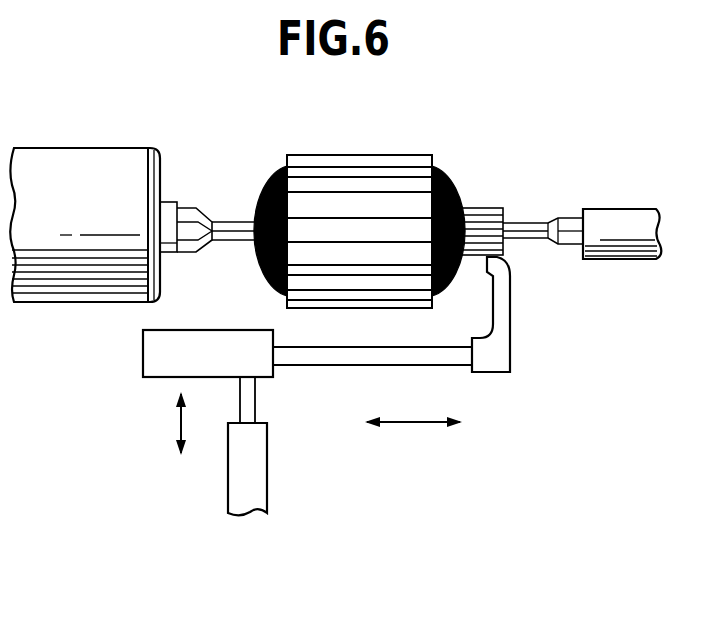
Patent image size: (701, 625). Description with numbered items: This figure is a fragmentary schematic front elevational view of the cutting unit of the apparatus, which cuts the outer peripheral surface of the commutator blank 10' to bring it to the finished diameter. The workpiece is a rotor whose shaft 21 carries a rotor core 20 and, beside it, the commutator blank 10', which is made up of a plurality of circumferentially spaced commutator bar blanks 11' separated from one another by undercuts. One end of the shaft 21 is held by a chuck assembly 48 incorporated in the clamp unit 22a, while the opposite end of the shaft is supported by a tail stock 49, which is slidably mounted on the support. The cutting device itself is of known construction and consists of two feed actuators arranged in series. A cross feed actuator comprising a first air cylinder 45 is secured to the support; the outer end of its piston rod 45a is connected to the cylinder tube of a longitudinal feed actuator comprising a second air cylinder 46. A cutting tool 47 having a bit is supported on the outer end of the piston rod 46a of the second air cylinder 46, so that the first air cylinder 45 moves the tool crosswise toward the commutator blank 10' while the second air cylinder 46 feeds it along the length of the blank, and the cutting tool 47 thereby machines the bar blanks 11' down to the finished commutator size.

The clamp unit 22a is at (97, 160).
The chuck assembly 48 is at (207, 203).
The shaft 21 is at (237, 221).
The rotor core 20 is at (347, 155).
The commutator blank 10' is at (488, 188).
The commutator bar blank 11' is at (543, 203).
The tail stock 49 is at (630, 212).
The cutting tool 47 is at (510, 309).
The second air cylinder 46 is at (143, 352).
The piston rod of the second air cylinder 46a is at (430, 365).
The piston rod of the first air cylinder 45a is at (255, 395).
The first air cylinder 45 is at (267, 470).